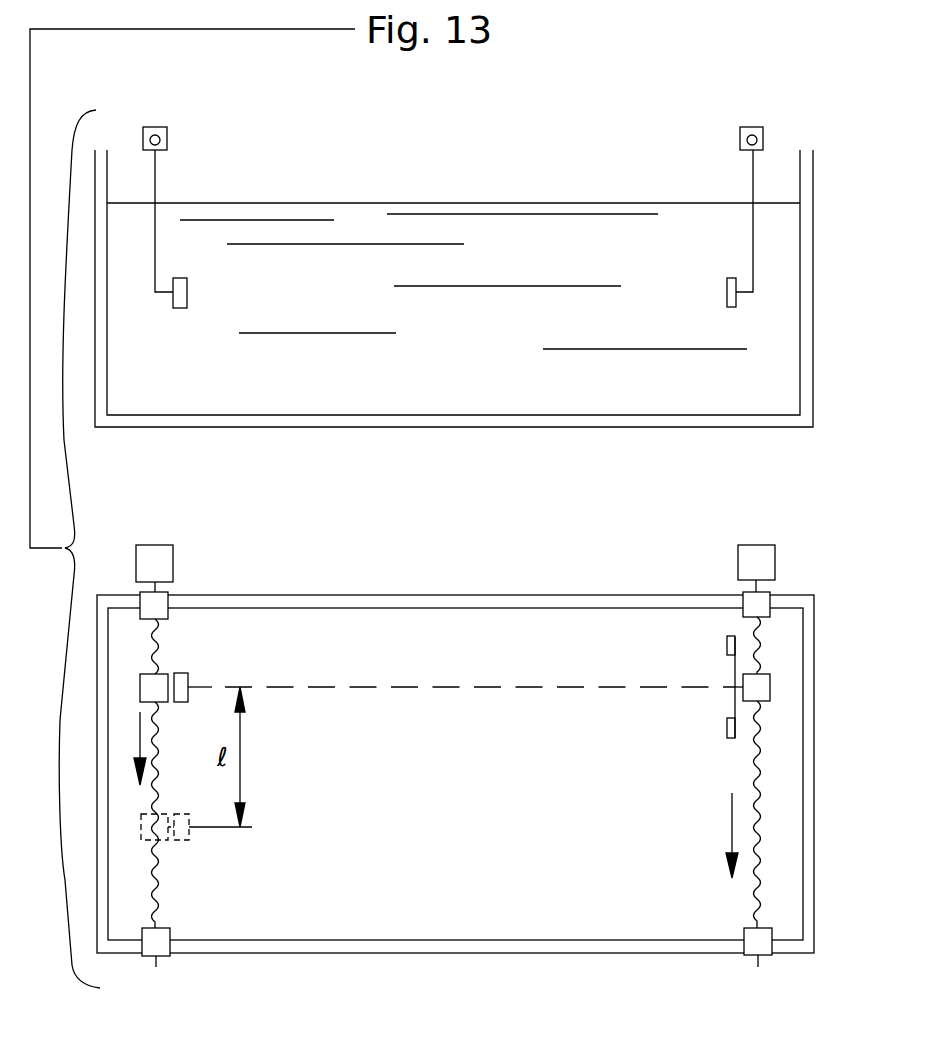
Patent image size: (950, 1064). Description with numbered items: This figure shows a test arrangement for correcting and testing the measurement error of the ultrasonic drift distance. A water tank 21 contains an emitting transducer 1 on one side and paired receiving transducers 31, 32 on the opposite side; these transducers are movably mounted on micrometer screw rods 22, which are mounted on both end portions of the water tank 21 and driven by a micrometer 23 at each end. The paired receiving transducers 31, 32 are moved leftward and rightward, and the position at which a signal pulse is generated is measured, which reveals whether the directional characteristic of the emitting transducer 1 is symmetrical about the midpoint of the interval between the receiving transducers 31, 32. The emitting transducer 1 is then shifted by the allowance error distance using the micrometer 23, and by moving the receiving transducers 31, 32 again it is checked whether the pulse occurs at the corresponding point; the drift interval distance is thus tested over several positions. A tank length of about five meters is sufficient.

The emitting transducer 1 is at (187, 292).
The receiving transducer 31 is at (727, 646).
The receiving transducer 32 is at (727, 729).
The water tank 21 is at (813, 290).
The micrometer screw rods 22 is at (157, 905).
The micrometer 23 is at (173, 563).